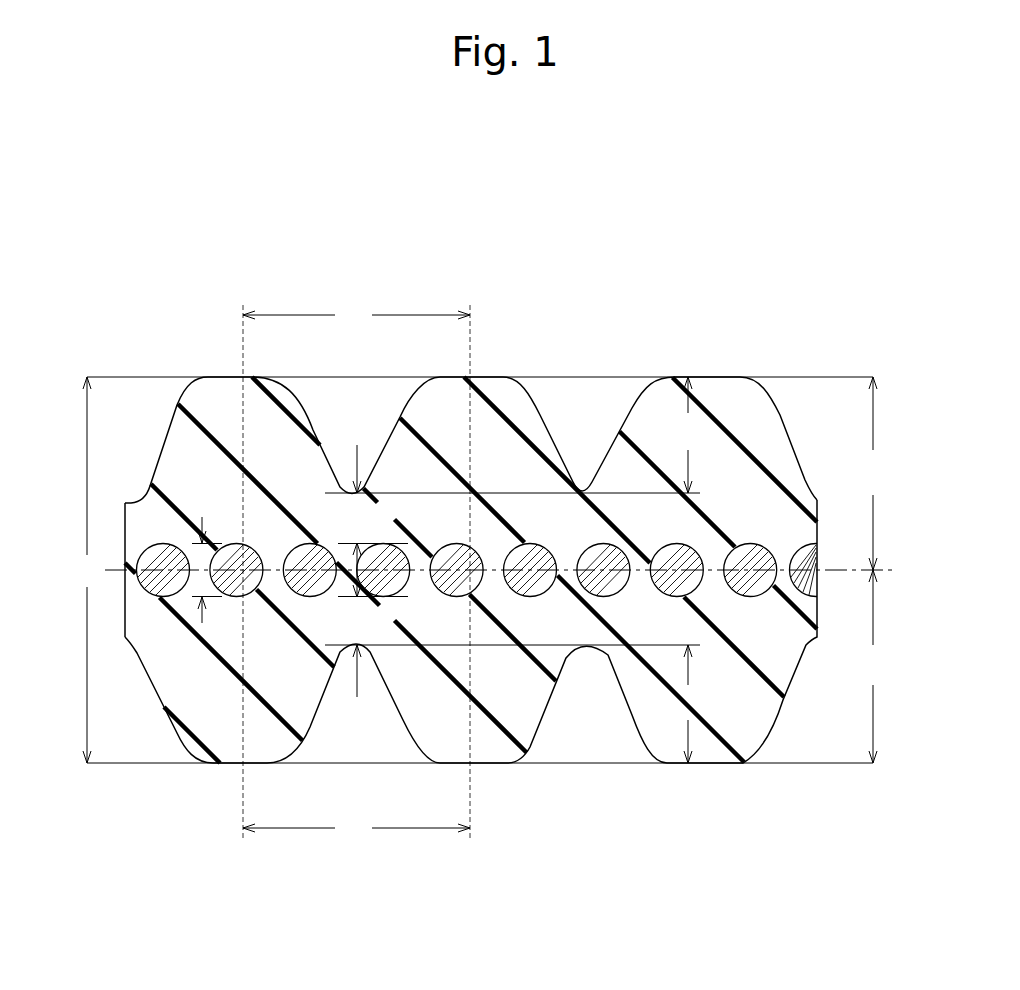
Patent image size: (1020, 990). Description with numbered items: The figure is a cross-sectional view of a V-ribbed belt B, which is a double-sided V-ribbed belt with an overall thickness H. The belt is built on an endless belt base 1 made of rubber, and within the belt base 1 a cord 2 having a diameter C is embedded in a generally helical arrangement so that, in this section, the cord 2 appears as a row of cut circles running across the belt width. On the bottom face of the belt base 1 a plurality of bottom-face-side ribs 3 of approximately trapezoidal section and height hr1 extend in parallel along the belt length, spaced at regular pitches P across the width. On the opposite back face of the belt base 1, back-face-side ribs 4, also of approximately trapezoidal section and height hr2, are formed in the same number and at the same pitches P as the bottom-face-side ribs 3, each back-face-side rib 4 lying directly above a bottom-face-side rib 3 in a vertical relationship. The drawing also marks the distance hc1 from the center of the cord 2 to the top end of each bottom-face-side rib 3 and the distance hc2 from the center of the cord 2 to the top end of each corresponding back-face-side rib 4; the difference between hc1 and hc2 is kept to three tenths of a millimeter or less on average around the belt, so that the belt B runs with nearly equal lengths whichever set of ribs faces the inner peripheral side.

The V-ribbed belt B is at (153, 206).
The belt base 1 is at (672, 613).
The cord 2 is at (541, 546).
The bottom-face-side ribs 3 is at (406, 723).
The back-face-side ribs 4 is at (225, 393).
The cord diameter C is at (205, 560).
The belt thickness H is at (485, 570).
The rib pitch P is at (356, 571).
The distance from cord center to bottom-face-side rib top hc1 is at (867, 666).
The distance from cord center to back-face-side rib top hc2 is at (868, 473).
The bottom-face-side rib height hr1 is at (519, 704).
The back-face-side rib height hr2 is at (518, 435).